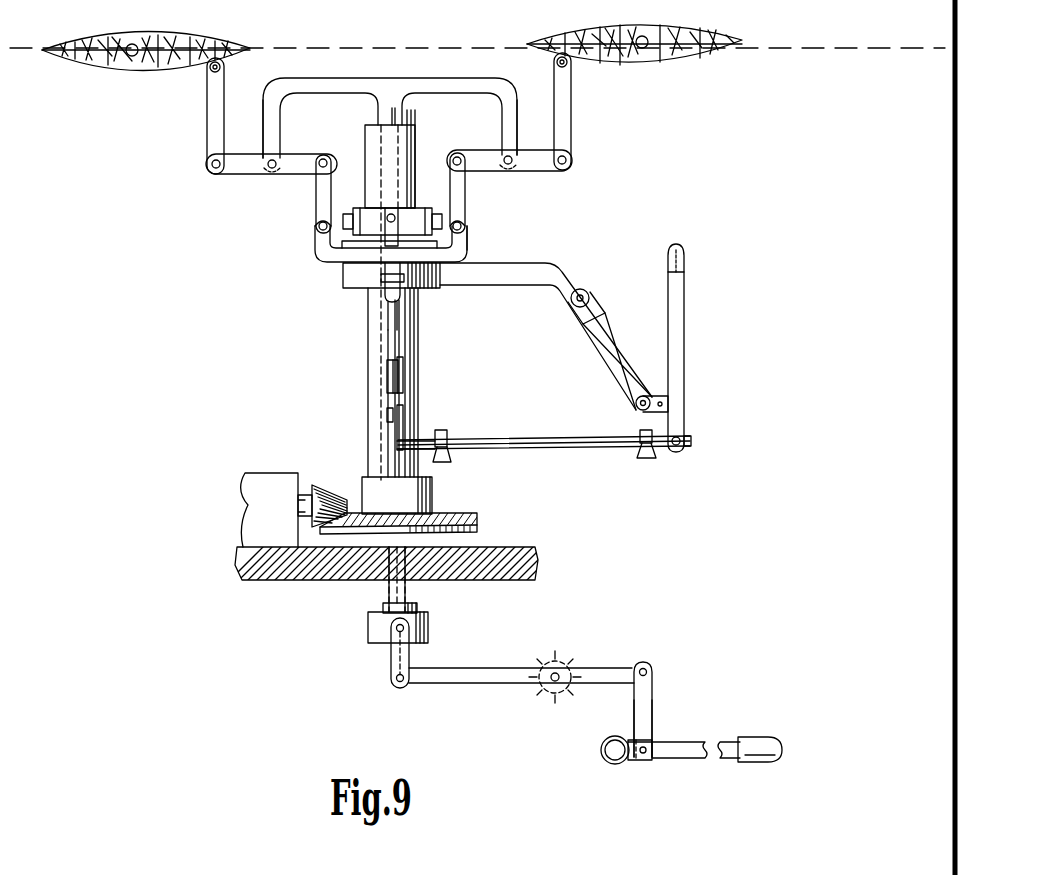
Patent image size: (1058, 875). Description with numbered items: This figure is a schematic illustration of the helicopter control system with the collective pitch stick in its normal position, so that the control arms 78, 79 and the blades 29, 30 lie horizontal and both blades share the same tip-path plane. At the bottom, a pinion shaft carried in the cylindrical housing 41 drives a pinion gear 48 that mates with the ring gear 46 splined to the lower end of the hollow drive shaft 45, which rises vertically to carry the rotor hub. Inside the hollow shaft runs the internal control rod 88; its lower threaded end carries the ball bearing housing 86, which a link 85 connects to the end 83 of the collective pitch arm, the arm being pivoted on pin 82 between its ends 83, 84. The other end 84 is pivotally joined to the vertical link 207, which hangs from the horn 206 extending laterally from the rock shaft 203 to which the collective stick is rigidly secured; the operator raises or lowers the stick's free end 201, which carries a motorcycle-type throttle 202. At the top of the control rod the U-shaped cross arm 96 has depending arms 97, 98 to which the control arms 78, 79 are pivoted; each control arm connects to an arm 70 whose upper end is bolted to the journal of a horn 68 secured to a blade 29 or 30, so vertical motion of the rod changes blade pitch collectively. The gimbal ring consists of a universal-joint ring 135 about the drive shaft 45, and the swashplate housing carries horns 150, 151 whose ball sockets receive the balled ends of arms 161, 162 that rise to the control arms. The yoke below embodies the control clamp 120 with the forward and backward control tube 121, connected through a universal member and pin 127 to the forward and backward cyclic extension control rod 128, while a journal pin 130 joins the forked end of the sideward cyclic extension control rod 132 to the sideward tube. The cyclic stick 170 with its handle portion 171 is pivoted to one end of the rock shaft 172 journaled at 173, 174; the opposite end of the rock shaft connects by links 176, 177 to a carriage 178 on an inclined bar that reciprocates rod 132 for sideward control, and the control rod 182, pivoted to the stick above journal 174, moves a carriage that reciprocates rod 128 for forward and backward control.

The blade 29 is at (180, 33).
The blade 30 is at (602, 26).
The horn 68 is at (207, 66).
The arm 70 is at (213, 115).
The control arm 78 is at (248, 172).
The control arm 79 is at (532, 165).
The U-shaped cross arm 96 is at (357, 78).
The depending arm 97 is at (271, 122).
The depending arm 98 is at (508, 118).
The hollow drive shaft 45 is at (378, 410).
The arm 161 is at (318, 190).
The arm 162 is at (483, 193).
The universal-joint ring 135 is at (410, 208).
The horn 150 is at (315, 252).
The horn 151 is at (468, 248).
The control clamp 120 is at (348, 285).
The journal pin 130 is at (400, 282).
The sideward cyclic extension control rod 132 is at (381, 335).
The forward and backward control tube 121 is at (552, 262).
The pin 127 is at (585, 292).
The forward and backward cyclic extension control rod 128 is at (612, 347).
The control rod 182 is at (653, 398).
The cyclic stick 170 is at (683, 332).
The handle portion 171 is at (684, 262).
The rock shaft 172 is at (548, 450).
The journal 173 is at (450, 450).
The journal 174 is at (655, 450).
The link 177 is at (388, 383).
The carriage 178 is at (403, 380).
The link 176 is at (403, 427).
The cylindrical housing 41 is at (268, 472).
The pinion gear 48 is at (327, 486).
The ring gear 46 is at (465, 520).
The internal control rod 88 is at (405, 590).
The ball bearing housing 86 is at (368, 627).
The link 85 is at (395, 658).
The end of pitch arm 83 is at (466, 688).
The pin 82 is at (552, 680).
The end of pitch arm 84 is at (605, 664).
The vertical link 207 is at (633, 705).
The free end of collective pitch stick 201 is at (710, 742).
The motorcycle-type throttle 202 is at (752, 762).
The rock shaft 203 is at (616, 758).
The horn 206 is at (650, 760).